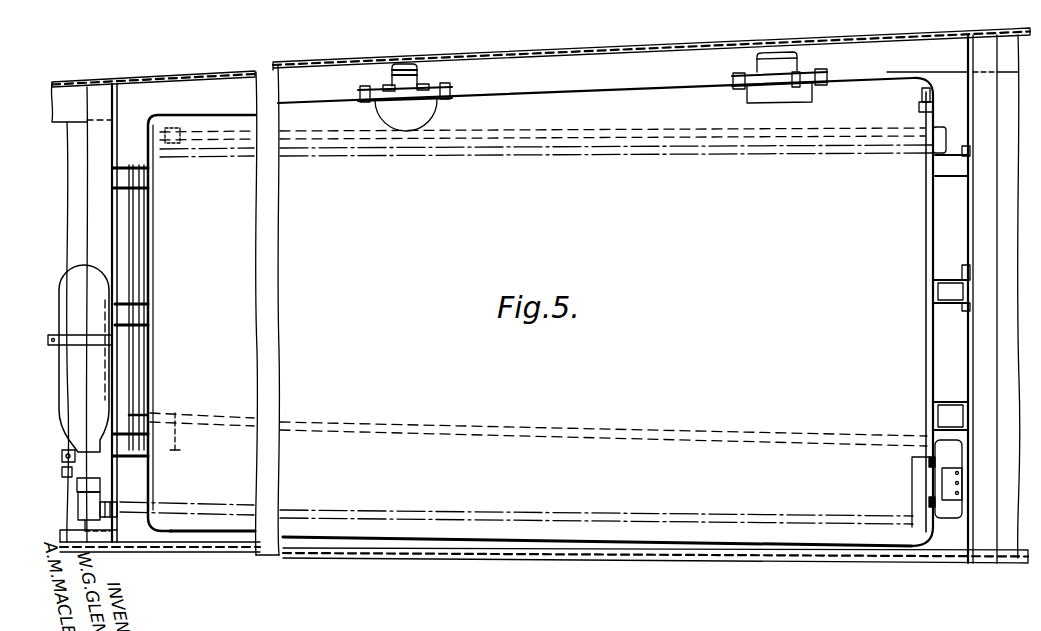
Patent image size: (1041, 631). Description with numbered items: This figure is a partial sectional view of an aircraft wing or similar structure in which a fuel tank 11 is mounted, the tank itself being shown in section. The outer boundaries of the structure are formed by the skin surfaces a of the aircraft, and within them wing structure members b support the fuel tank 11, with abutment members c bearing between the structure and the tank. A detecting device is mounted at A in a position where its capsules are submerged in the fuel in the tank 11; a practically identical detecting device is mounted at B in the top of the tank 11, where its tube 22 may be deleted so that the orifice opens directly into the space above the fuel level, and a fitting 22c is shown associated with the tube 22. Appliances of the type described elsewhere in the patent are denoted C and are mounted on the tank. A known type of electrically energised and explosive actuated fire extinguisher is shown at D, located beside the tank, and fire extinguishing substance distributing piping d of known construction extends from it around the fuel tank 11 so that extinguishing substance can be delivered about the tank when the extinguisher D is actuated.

The skin surfaces a is at (522, 56).
The wing structure members b is at (981, 43).
The abutment members c is at (150, 257).
The fire extinguishing substance distributing piping d is at (133, 505).
The fuel tank 11 is at (705, 559).
The tube 22 is at (924, 239).
The pipe fitting 22c is at (921, 97).
The detecting device A is at (963, 452).
The detecting device B is at (803, 73).
The appliances C is at (428, 86).
The fire extinguisher D is at (82, 397).